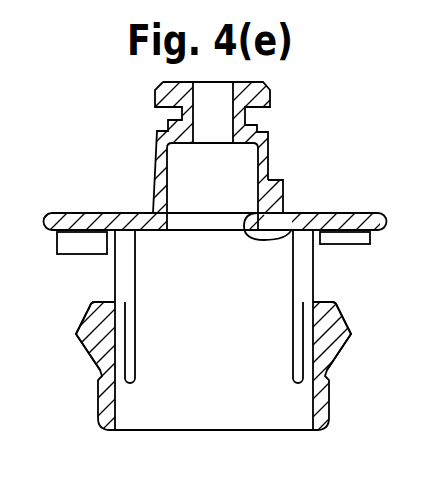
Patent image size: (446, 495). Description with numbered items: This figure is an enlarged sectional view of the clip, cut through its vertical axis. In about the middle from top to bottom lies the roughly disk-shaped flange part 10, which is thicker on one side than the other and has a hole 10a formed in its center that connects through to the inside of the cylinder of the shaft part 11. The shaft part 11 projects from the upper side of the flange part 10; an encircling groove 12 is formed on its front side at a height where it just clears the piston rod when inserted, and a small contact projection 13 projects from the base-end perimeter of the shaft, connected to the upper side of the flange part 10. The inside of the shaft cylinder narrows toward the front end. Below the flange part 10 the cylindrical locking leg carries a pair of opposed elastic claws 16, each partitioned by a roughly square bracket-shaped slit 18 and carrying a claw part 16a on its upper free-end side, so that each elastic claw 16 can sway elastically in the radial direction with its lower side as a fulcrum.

The flange part 10 is at (62, 210).
The hole 10a is at (308, 212).
The shaft part 11 is at (261, 143).
The encircling groove 12 is at (172, 122).
The contact projection 13 is at (262, 200).
The elastic claw 16 is at (88, 355).
The claw part 16a is at (85, 328).
The slit 18 is at (135, 382).